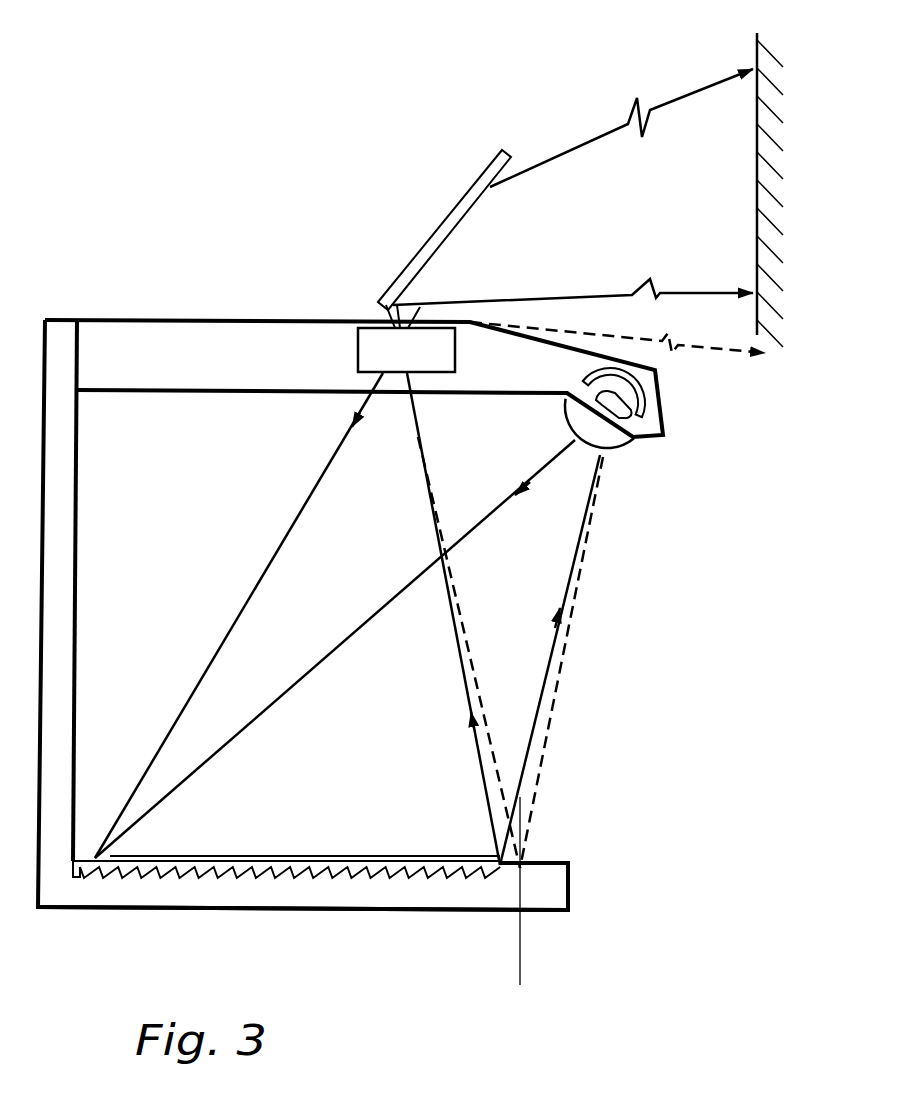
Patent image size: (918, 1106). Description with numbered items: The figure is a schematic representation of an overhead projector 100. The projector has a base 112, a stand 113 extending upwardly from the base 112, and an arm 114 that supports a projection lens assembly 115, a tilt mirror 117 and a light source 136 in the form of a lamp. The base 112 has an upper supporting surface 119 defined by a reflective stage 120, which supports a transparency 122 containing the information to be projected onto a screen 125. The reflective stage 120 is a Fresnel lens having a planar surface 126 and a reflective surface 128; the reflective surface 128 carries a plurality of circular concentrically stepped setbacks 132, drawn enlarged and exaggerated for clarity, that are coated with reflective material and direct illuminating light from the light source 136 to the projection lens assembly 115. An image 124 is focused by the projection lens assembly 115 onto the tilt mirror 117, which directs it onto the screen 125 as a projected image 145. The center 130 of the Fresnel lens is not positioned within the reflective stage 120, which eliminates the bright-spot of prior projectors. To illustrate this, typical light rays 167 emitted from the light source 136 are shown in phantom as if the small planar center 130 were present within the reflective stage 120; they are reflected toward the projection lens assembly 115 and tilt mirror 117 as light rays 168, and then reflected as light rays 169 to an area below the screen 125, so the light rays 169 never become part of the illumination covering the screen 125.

The overhead projector 100 is at (146, 632).
The base 112 is at (207, 914).
The stand 113 is at (36, 477).
The arm 114 is at (136, 314).
The projection lens assembly 115 is at (354, 345).
The tilt mirror 117 is at (470, 188).
The upper supporting surface 119 is at (550, 862).
The reflective stage 120 is at (62, 870).
The transparency 122 is at (165, 857).
The image 124 is at (400, 850).
The screen 125 is at (755, 52).
The planar surface 126 is at (87, 853).
The reflective surface 128 is at (381, 882).
The center of the Fresnel lens 130 is at (533, 872).
The stepped setbacks 132 is at (147, 882).
The light source 136 is at (645, 444).
The projected image 145 is at (751, 237).
The light rays 167 is at (572, 640).
The light rays 168 is at (467, 620).
The light rays 169 is at (637, 338).